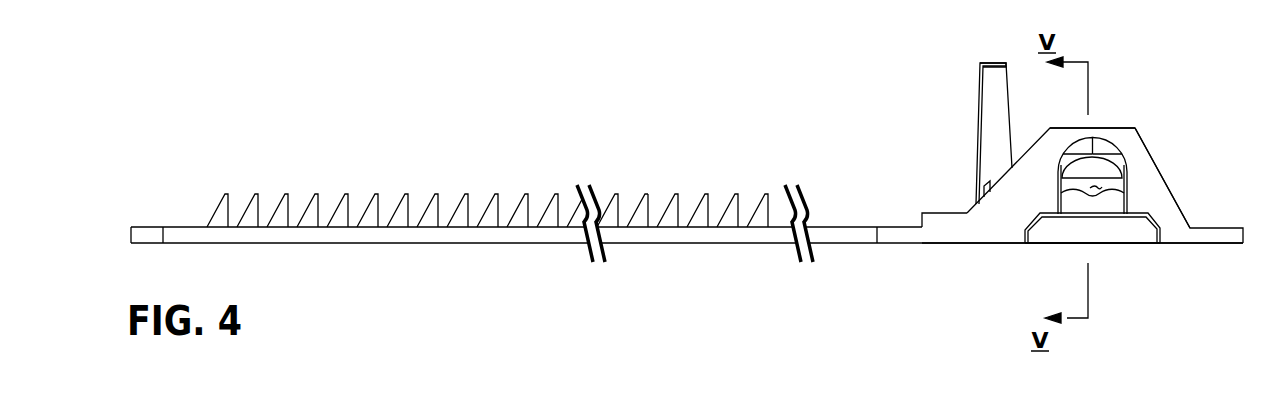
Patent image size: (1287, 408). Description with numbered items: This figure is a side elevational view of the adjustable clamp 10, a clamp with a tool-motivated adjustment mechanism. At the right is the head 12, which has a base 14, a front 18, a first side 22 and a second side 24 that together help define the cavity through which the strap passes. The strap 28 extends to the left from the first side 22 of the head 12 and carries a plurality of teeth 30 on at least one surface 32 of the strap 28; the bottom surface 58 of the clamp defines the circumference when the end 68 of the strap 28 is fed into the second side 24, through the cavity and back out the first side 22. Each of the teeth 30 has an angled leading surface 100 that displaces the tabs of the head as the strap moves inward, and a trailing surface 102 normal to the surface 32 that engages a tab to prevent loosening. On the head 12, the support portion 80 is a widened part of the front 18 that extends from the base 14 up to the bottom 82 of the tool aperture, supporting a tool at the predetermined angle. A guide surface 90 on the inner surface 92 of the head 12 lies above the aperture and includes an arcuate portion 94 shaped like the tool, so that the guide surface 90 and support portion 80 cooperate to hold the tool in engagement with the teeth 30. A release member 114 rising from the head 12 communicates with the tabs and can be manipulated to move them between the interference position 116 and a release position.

The adjustable clamp 10 is at (1193, 84).
The head 12 is at (1137, 128).
The base 14 is at (1102, 244).
The front 18 is at (1000, 217).
The first side 22 is at (965, 212).
The second side 24 is at (1155, 162).
The strap 28 is at (190, 227).
The teeth 30 is at (519, 210).
The surface 32 is at (832, 227).
The bottom surface 58 is at (718, 243).
The end 68 is at (132, 236).
The support portion 80 is at (1052, 232).
The bottom 82 is at (1097, 203).
The guide surface 90 is at (1085, 145).
The inner surface 92 is at (1098, 176).
The arcuate portion 94 is at (1107, 147).
The angled leading surface 100 is at (636, 207).
The trailing surface 102 is at (657, 207).
The release member 114 is at (985, 128).
The interference position 116 is at (966, 81).